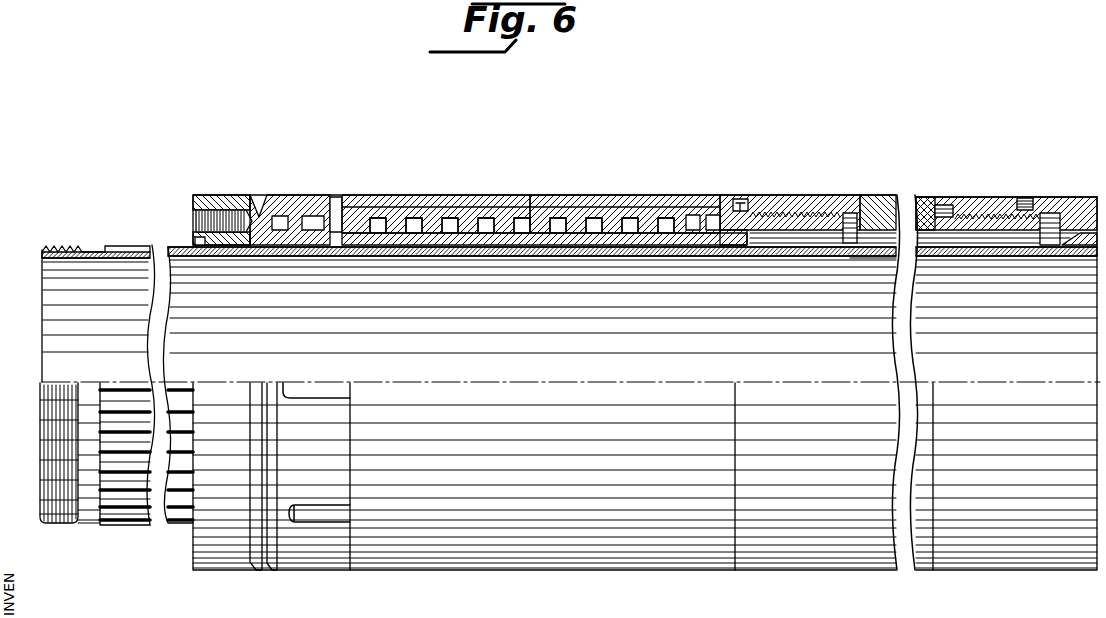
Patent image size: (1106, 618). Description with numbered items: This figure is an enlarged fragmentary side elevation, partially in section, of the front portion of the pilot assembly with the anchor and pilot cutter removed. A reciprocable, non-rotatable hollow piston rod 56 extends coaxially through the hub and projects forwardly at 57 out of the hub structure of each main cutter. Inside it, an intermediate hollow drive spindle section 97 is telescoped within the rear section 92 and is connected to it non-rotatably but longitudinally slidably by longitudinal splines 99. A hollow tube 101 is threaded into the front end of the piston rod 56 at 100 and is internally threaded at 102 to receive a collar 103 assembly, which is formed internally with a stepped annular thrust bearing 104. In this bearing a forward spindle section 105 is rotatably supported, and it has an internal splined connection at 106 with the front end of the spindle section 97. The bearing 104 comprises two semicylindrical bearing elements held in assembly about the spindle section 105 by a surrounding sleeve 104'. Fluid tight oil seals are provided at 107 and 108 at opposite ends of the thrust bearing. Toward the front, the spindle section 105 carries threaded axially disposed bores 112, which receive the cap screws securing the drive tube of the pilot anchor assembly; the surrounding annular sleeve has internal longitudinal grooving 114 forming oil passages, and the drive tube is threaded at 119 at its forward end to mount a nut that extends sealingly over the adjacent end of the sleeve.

The hollow piston rod 56 is at (1036, 173).
The forward projection of piston rod 57 is at (985, 203).
The rear section 92 is at (1063, 203).
The intermediate hollow drive spindle section 97 is at (868, 250).
The longitudinal splines 99 is at (1068, 249).
The threaded connection 100 is at (965, 211).
The hollow tube 101 is at (886, 200).
The internal threads 102 is at (800, 200).
The collar assembly 103 is at (745, 200).
The stepped annular thrust bearing 104 is at (436, 198).
The surrounding sleeve 104' is at (625, 198).
The forward spindle section 105 is at (414, 240).
The internal splined connection 106 is at (237, 250).
The oil seal 107 is at (284, 200).
The oil seal 108 is at (722, 247).
The threaded axially disposed bores 112 is at (215, 200).
The internal longitudinal grooving 114 is at (120, 525).
The threaded forward end 119 is at (64, 249).